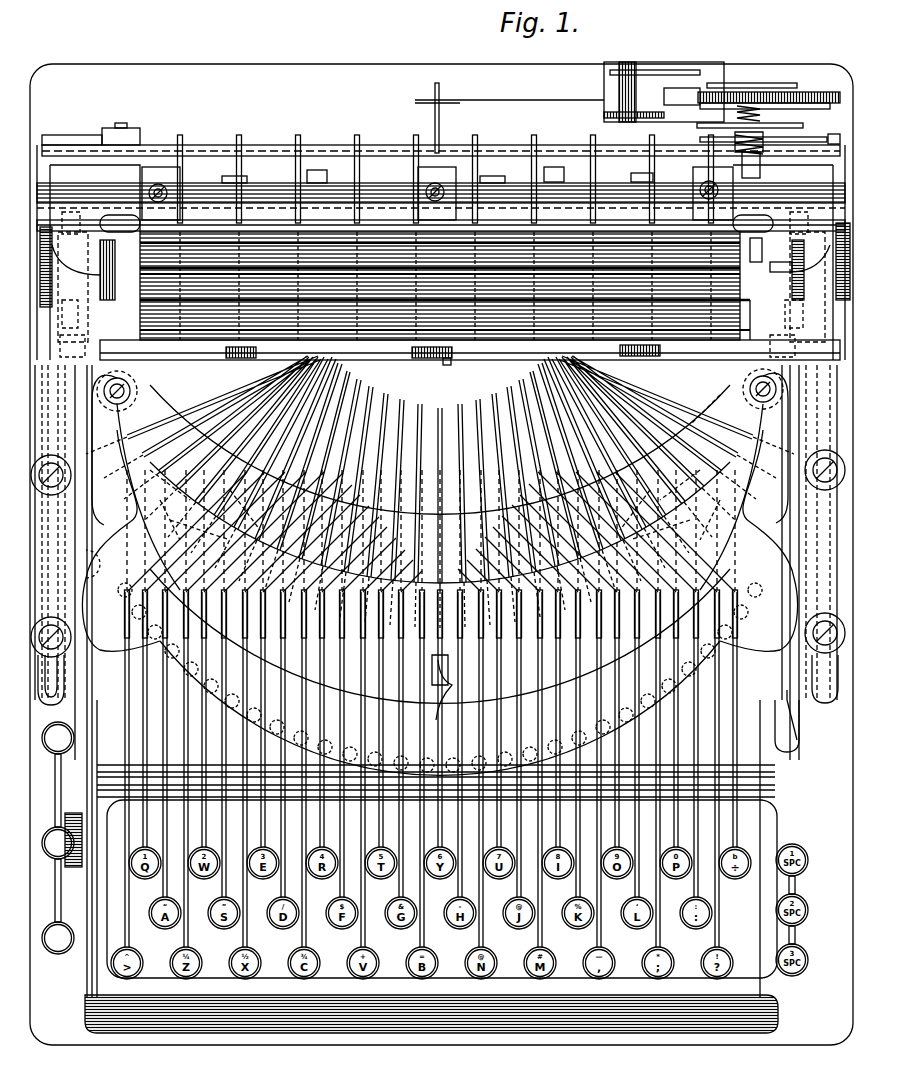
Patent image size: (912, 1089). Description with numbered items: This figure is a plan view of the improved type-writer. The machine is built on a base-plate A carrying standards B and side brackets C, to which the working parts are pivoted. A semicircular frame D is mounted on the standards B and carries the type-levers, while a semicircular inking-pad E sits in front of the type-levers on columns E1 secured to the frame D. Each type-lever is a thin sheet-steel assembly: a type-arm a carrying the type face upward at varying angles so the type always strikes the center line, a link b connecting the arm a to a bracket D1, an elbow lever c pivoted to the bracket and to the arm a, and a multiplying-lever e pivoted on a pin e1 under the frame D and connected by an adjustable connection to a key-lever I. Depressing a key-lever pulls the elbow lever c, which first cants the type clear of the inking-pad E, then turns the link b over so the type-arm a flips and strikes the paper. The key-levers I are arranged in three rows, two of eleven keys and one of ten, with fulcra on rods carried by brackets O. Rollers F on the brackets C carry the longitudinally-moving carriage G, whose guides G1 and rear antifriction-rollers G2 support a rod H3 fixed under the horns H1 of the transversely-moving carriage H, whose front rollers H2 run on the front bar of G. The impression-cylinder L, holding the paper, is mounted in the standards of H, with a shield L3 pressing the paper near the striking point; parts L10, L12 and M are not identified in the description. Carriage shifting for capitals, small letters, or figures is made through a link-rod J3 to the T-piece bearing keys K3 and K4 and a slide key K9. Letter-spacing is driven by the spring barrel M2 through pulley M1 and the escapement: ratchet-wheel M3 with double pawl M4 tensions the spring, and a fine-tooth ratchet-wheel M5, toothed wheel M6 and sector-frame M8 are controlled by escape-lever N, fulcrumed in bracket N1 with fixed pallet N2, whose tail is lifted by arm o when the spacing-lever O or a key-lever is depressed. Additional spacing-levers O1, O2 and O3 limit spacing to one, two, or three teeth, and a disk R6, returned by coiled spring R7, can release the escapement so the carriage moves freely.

The base-plate A is at (441, 554).
The standards B is at (438, 681).
The bracket C is at (443, 252).
The semicircular frame D is at (440, 574).
The bracket D1 is at (698, 410).
The semicircular inking-pad E is at (429, 578).
The columns E1 is at (440, 386).
The rollers F is at (441, 265).
The longitudinally-moving carriage G is at (427, 360).
The guides G1 is at (441, 166).
The antifriction-rollers G2 is at (445, 168).
The transversely-moving carriage H is at (441, 265).
The horns H1 is at (175, 170).
The antifriction-rollers H2 is at (438, 364).
The rod H3 is at (441, 171).
The key-lever I is at (245, 142).
The link-rod J3 is at (85, 690).
The key K3 is at (61, 765).
The key K4 is at (55, 954).
The key K9 is at (62, 867).
The impression-cylinder L is at (440, 286).
The shield L3 is at (445, 315).
The platen lever L10 is at (781, 289).
The platen ratchet L12 is at (802, 271).
The carriage lug M is at (120, 224).
The pulley M1 is at (753, 223).
The barrel M2 is at (88, 140).
The ratchet-wheel M3 is at (200, 146).
The double pawl M4 is at (62, 138).
The fine-tooth ratchet-wheel M5 is at (765, 107).
The toothed wheel M6 is at (769, 88).
The sector-frame M8 is at (797, 75).
The escape-lever N is at (509, 112).
The bracket N1 is at (655, 70).
The fixed pallet N2 is at (682, 104).
The spacing-lever O is at (437, 848).
The spacing-lever O1 is at (794, 726).
The spacing-lever O2 is at (779, 721).
The spacing-lever O3 is at (774, 691).
The disk R6 is at (760, 125).
The coiled spring R7 is at (759, 130).
The type-arm a is at (440, 484).
The link b is at (440, 492).
The elbow lever c is at (435, 500).
The multiplying-lever e is at (432, 585).
The pin e1 is at (434, 677).
The arm o is at (434, 114).